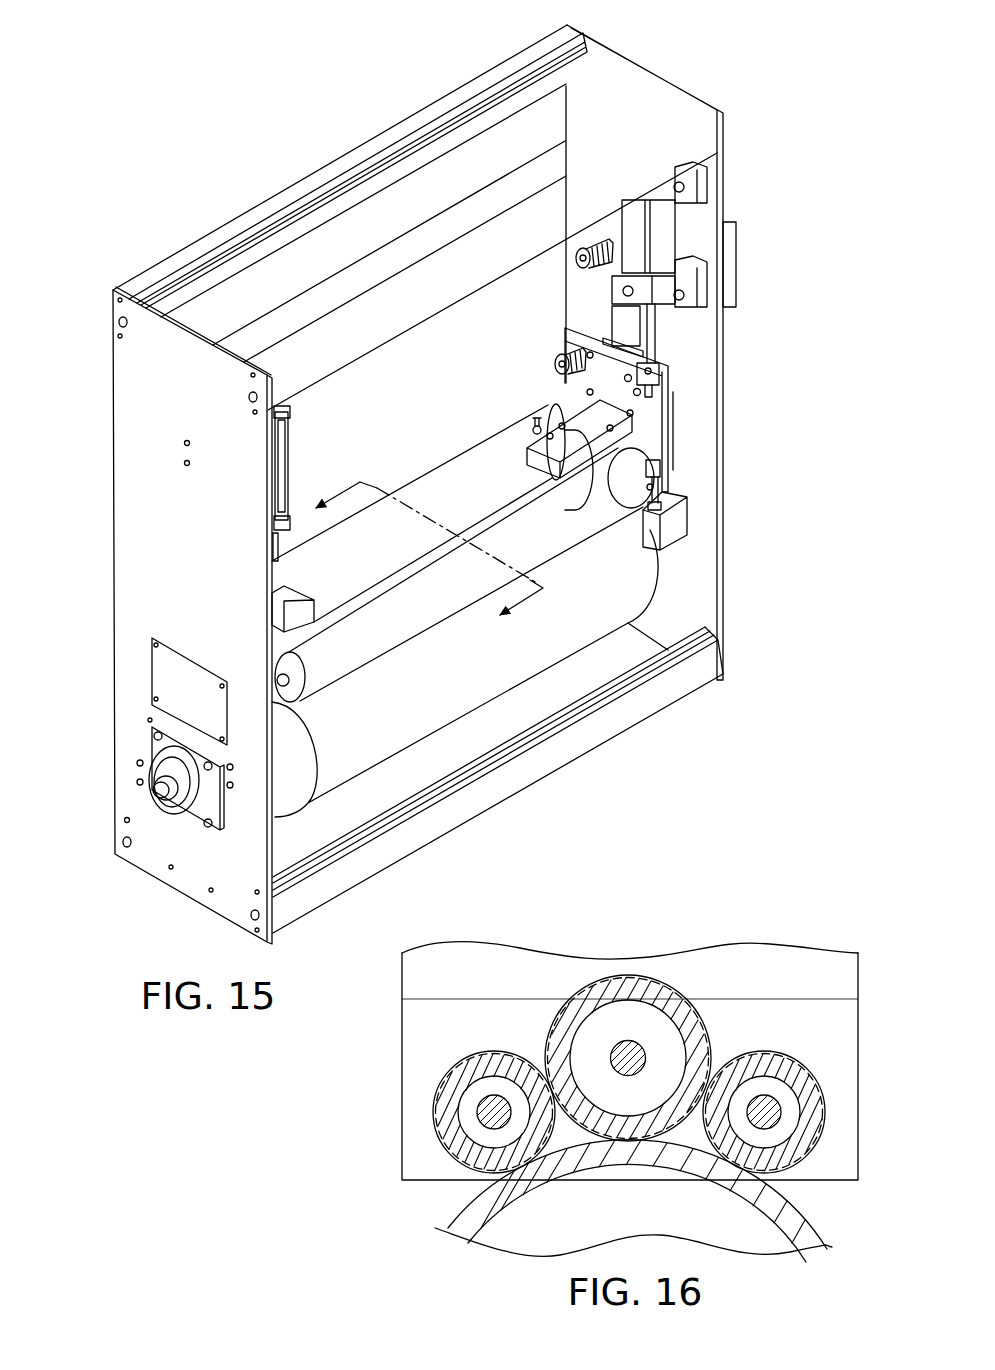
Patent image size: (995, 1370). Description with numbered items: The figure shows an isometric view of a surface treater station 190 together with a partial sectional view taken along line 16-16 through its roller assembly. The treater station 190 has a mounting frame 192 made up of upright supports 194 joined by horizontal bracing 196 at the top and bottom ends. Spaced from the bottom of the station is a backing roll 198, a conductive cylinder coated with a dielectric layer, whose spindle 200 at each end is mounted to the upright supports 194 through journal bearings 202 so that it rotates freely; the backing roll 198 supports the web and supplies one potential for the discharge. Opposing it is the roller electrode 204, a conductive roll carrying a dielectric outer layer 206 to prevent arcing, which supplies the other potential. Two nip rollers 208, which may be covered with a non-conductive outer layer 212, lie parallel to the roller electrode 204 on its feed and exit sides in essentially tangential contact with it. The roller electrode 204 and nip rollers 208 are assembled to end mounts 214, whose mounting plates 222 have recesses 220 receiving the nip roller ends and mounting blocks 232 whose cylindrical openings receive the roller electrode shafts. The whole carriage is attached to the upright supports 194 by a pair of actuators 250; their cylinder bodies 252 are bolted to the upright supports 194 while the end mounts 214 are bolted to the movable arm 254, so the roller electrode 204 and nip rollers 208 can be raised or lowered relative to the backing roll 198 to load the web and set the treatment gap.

In FIG. 15, the treater station 190 is at (200, 130).
In FIG. 15, the mounting frame 192 is at (686, 78).
In FIG. 15, the upright supports 194 is at (142, 558).
In FIG. 15, the horizontal bracing 196 is at (372, 188).
In FIG. 15, the backing roll 198 is at (353, 727).
In FIG. 16, the backing roll 198 is at (795, 1228).
In FIG. 15, the spindle 200 is at (160, 792).
In FIG. 15, the journal bearings 202 is at (192, 822).
In FIG. 15, the roller electrode 204 is at (520, 488).
In FIG. 16, the roller electrode 204 is at (608, 977).
In FIG. 15, the dielectric outer layer 206 is at (325, 593).
In FIG. 16, the dielectric outer layer 206 is at (672, 991).
In FIG. 15, the nip rollers 208 is at (442, 487).
In FIG. 16, the nip rollers 208 is at (442, 1123).
In FIG. 15, the non-conductive outer layer 212 is at (328, 650).
In FIG. 16, the non-conductive outer layer 212 is at (438, 1080).
In FIG. 15, the end mounts 214 is at (680, 413).
In FIG. 16, the end mounts 214 is at (822, 969).
In FIG. 15, the recesses 220 is at (563, 412).
In FIG. 15, the mounting plates 222 is at (573, 398).
In FIG. 15, the mounting blocks 232 is at (277, 604).
In FIG. 15, the actuators 250 is at (603, 229).
In FIG. 15, the cylinder bodies 252 is at (668, 248).
In FIG. 15, the movable arm 254 is at (662, 368).
In FIG. 15, the section line 16- 16 is at (417, 560).